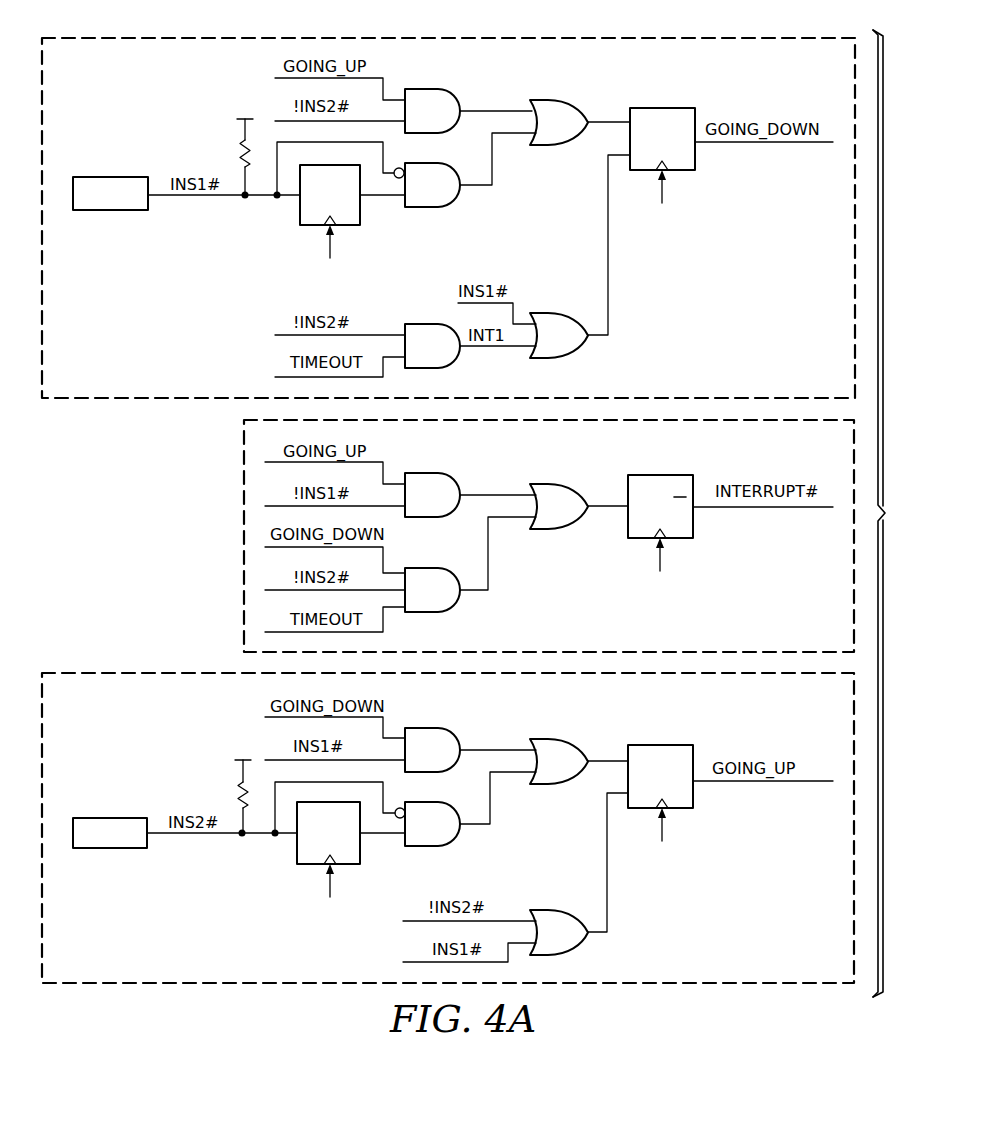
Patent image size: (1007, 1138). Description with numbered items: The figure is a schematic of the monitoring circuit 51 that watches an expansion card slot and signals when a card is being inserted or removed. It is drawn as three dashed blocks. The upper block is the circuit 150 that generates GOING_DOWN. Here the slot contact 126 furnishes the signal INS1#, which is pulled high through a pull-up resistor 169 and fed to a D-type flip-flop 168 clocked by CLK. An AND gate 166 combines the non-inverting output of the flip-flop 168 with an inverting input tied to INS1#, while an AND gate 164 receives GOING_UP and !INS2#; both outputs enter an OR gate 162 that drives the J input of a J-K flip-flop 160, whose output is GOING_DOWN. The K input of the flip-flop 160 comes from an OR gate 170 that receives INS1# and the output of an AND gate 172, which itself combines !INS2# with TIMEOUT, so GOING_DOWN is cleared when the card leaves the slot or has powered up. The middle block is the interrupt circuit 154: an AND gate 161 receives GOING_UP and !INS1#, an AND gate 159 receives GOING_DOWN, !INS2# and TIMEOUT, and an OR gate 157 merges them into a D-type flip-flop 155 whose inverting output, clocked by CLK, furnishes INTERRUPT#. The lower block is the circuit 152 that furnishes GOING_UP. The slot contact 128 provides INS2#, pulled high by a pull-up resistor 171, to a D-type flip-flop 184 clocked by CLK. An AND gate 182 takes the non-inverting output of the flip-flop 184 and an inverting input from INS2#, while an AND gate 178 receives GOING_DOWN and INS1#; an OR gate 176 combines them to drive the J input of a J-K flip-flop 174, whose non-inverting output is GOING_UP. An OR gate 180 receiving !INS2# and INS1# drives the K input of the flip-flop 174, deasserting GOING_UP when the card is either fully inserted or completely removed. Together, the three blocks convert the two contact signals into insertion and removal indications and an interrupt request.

The monitoring circuit 51 is at (895, 513).
The contact 126 is at (110, 210).
The contact 128 is at (110, 848).
The circuit 150 is at (817, 378).
The circuit 152 is at (815, 963).
The interrupt circuit 154 is at (817, 630).
The D-type flip-flop 155 is at (693, 525).
The OR gate 157 is at (548, 484).
The AND gate 159 is at (455, 612).
The J-K flip-flop 160 is at (664, 108).
The AND gate 161 is at (453, 474).
The OR gate 162 is at (552, 100).
The AND gate 164 is at (453, 90).
The AND gate 166 is at (455, 206).
The D-type flip-flop 168 is at (300, 212).
The pull-up resistor 169 is at (240, 157).
The OR gate 170 is at (550, 313).
The pull-up resistor 171 is at (239, 797).
The AND gate 172 is at (421, 324).
The J-K flip-flop 174 is at (663, 745).
The OR gate 176 is at (550, 739).
The AND gate 178 is at (474, 720).
The OR gate 180 is at (550, 910).
The AND gate 182 is at (455, 846).
The D-type flip-flop 184 is at (297, 852).